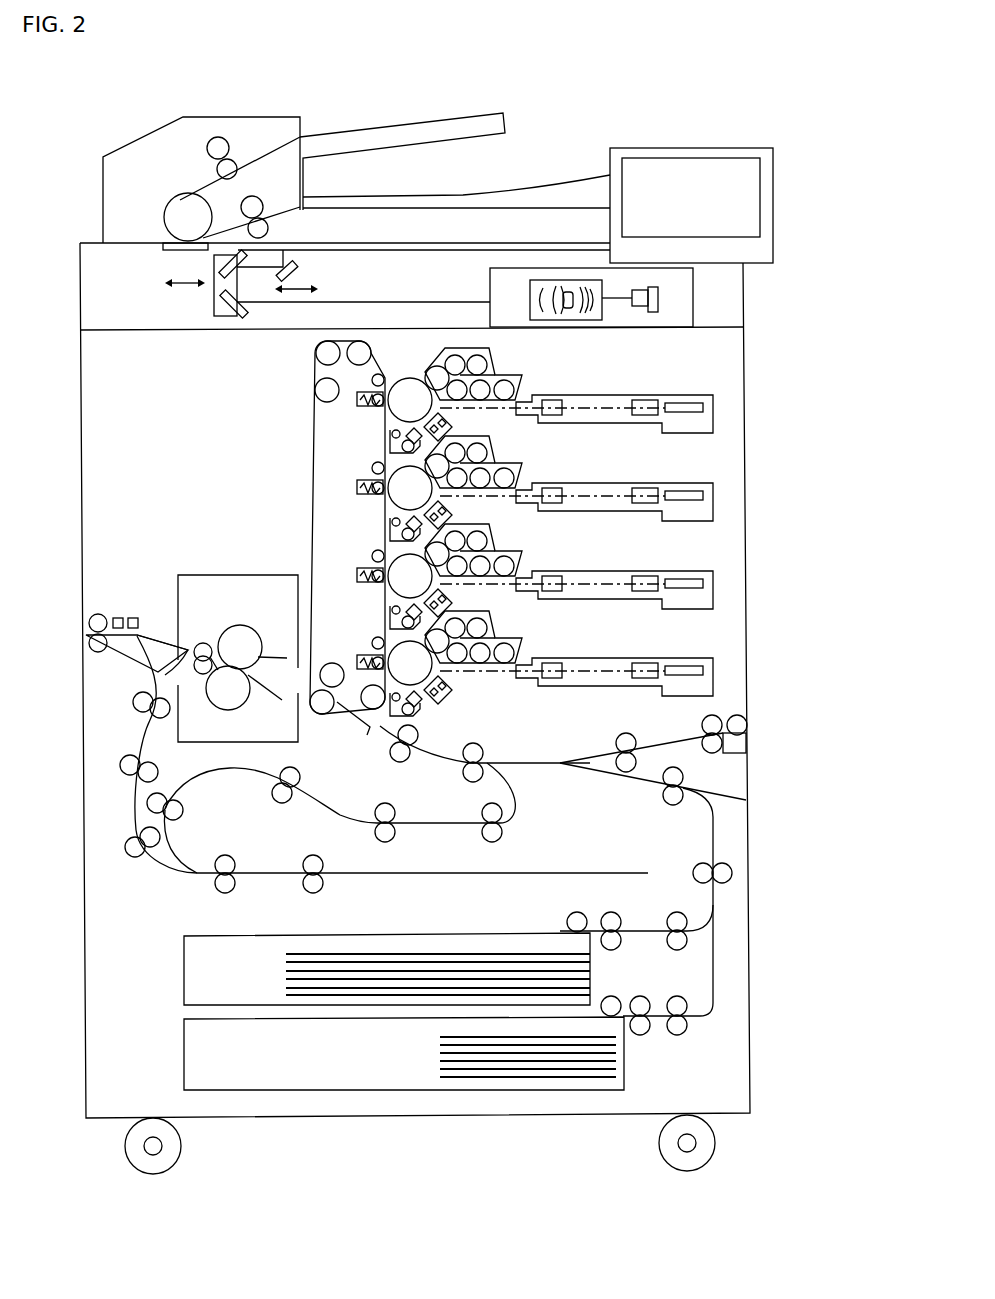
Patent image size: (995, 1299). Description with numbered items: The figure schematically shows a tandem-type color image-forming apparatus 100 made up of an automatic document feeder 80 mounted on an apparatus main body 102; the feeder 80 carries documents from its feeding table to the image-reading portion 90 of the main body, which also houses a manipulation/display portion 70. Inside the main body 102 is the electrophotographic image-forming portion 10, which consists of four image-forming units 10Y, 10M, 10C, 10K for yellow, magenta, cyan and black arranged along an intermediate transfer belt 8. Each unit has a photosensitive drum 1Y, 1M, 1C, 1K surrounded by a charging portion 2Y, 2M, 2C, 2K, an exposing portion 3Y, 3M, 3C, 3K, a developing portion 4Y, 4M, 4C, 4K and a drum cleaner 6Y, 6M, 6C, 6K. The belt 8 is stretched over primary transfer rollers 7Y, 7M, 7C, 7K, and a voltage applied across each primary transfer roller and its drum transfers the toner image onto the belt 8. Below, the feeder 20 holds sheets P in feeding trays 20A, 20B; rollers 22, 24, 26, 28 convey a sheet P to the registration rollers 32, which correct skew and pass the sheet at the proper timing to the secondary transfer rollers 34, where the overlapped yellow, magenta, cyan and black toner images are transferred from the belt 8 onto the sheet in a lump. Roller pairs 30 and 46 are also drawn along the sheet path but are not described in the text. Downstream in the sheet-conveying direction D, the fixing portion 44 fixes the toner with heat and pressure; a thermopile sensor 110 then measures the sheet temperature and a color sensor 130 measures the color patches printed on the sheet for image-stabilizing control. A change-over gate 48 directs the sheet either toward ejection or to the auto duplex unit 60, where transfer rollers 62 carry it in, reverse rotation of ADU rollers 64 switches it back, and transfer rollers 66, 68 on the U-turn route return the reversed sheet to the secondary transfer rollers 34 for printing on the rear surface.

The image-forming apparatus 100 is at (398, 66).
The automatic document feeder 80 is at (548, 152).
The manipulation/display portion 70 is at (692, 148).
The image-reading portion 90 is at (112, 288).
The apparatus main body 102 is at (745, 379).
The image-forming portion 10 is at (716, 457).
The intermediate transfer belt 8 is at (315, 432).
The image-forming unit 10Y is at (525, 396).
The image-forming unit 10M is at (517, 483).
The image-forming unit 10C is at (517, 571).
The image-forming unit 10K is at (519, 665).
The photosensitive drum 1Y is at (410, 400).
The photosensitive drum 1M is at (410, 488).
The photosensitive drum 1C is at (410, 576).
The photosensitive drum 1K is at (410, 663).
The charging portion 2Y is at (462, 427).
The charging portion 2M is at (464, 515).
The charging portion 2C is at (462, 603).
The charging portion 2K is at (462, 690).
The exposing portion 3Y is at (614, 399).
The exposing portion 3M is at (614, 486).
The exposing portion 3C is at (614, 574).
The exposing portion 3K is at (614, 661).
The developing portion 4Y is at (488, 368).
The developing portion 4M is at (490, 456).
The developing portion 4C is at (488, 544).
The developing portion 4K is at (488, 631).
The drum cleaner 6Y is at (383, 441).
The drum cleaner 6M is at (384, 525).
The drum cleaner 6C is at (383, 610).
The drum cleaner 6K is at (431, 710).
The primary transfer roller 7Y is at (360, 413).
The primary transfer roller 7M is at (352, 485).
The primary transfer roller 7C is at (352, 572).
The primary transfer roller 7K is at (354, 652).
The fixing portion 44 is at (238, 633).
The change-over gate 48 is at (190, 643).
The output rollers 46 is at (97, 612).
The thermopile sensor 110 is at (133, 612).
The color sensor 130 is at (120, 640).
The auto duplex unit (ADU) 60 is at (112, 815).
The transfer rollers 62 is at (123, 756).
The transfer rollers 66 is at (184, 808).
The ADU rollers 64 is at (226, 856).
The secondary transfer rollers 34 is at (322, 714).
The registration rollers 32 is at (400, 762).
The registration rollers 30 is at (475, 744).
The transfer rollers 68 is at (502, 834).
The rollers 28 is at (664, 793).
The rollers 26 is at (698, 864).
The rollers 22 is at (580, 912).
The rollers 24 is at (612, 912).
The feeder 20 is at (356, 1020).
The feeding tray 20A is at (184, 972).
The feeding tray 20B is at (184, 1056).
The sheet P is at (398, 952).
The sheet-conveying direction D is at (530, 1170).